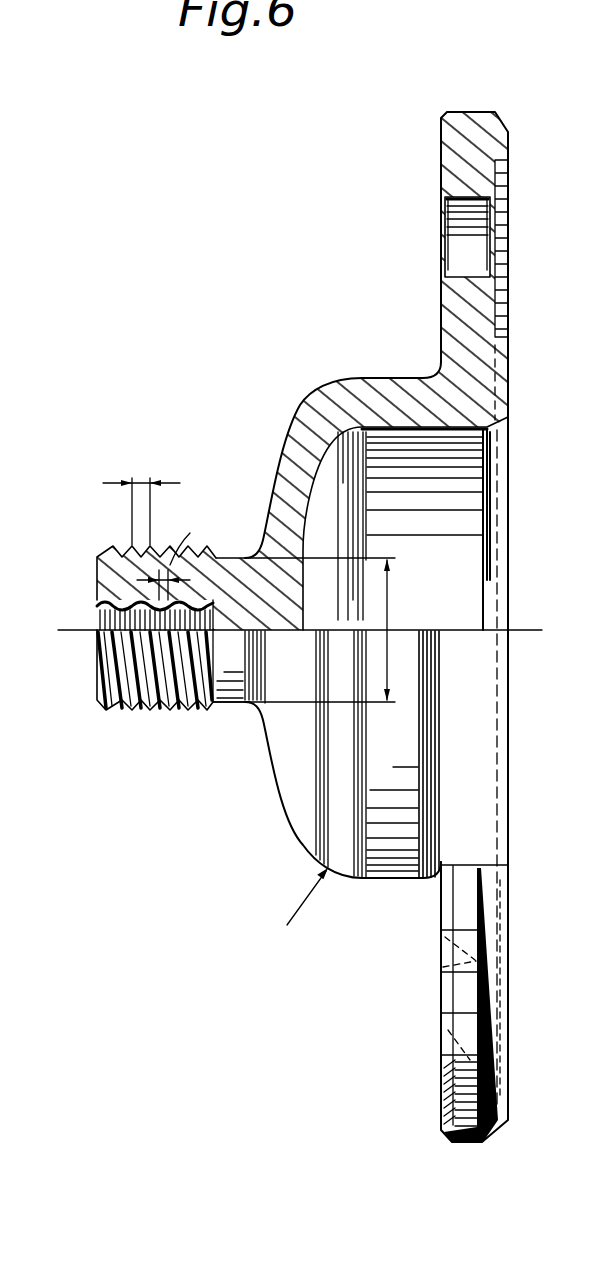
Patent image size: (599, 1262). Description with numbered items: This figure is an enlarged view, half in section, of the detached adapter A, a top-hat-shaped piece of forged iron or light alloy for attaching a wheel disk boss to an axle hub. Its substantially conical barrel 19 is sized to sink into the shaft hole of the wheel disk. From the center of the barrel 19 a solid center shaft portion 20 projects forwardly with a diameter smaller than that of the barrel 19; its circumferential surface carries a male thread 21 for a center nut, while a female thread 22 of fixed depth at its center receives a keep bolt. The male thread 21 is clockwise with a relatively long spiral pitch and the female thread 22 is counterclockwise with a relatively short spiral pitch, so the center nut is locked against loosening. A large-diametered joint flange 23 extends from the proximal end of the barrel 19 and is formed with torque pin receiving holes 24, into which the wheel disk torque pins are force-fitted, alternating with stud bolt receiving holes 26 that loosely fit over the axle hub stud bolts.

The barrel 19 is at (333, 397).
The center shaft portion 20 is at (228, 703).
The male thread 21 is at (147, 710).
The female thread 22 is at (97, 615).
The joint flange 23 is at (465, 125).
The torque pin receiving holes 24 is at (468, 267).
The stud bolt receiving holes 26 is at (440, 968).